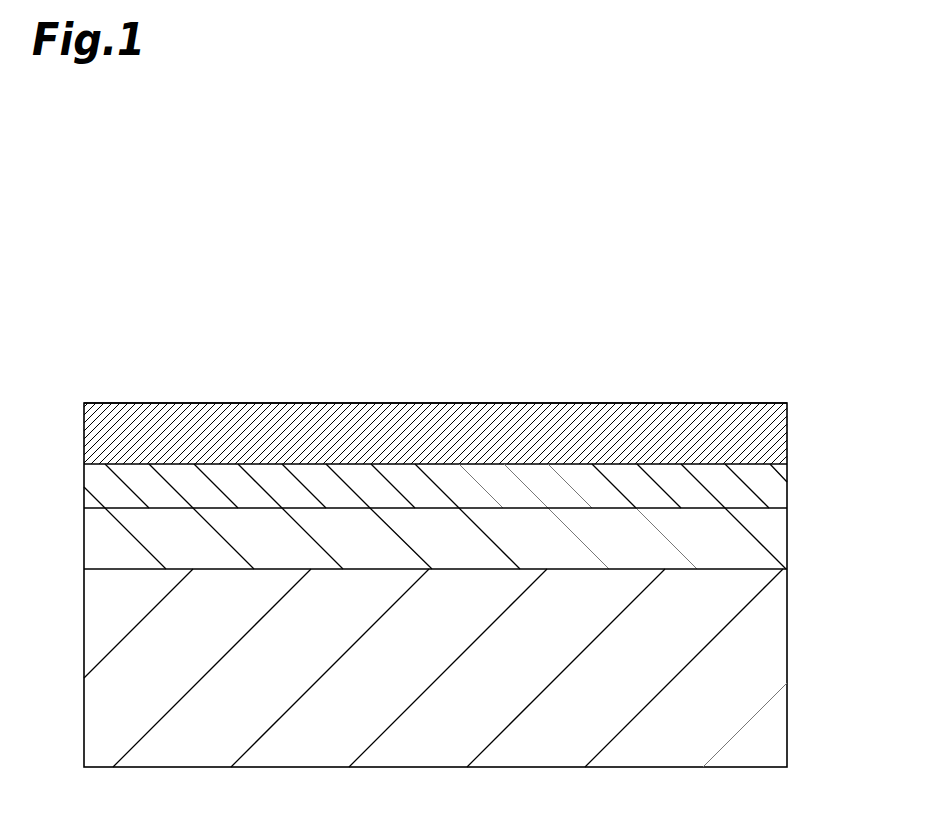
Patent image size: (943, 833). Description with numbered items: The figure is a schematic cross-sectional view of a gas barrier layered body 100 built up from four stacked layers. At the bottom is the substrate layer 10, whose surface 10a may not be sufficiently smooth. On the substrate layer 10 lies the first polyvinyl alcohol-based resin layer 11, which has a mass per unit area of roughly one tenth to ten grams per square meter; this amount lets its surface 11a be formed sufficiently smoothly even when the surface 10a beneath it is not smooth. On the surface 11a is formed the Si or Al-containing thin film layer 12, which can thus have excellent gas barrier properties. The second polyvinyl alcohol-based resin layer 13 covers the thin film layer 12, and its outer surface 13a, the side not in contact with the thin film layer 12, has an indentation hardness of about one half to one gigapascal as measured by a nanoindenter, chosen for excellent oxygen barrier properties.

The gas barrier layered body 100 is at (793, 261).
The substrate layer 10 is at (772, 659).
The surface of the substrate layer 10a is at (563, 567).
The first polyvinyl alcohol-based resin layer 11 is at (773, 543).
The surface of the first polyvinyl alcohol-based resin layer 11a is at (426, 507).
The Si or Al-containing thin film layer 12 is at (770, 490).
The second polyvinyl alcohol-based resin layer 13 is at (773, 433).
The surface of the second polyvinyl alcohol-based resin layer 13a is at (659, 403).